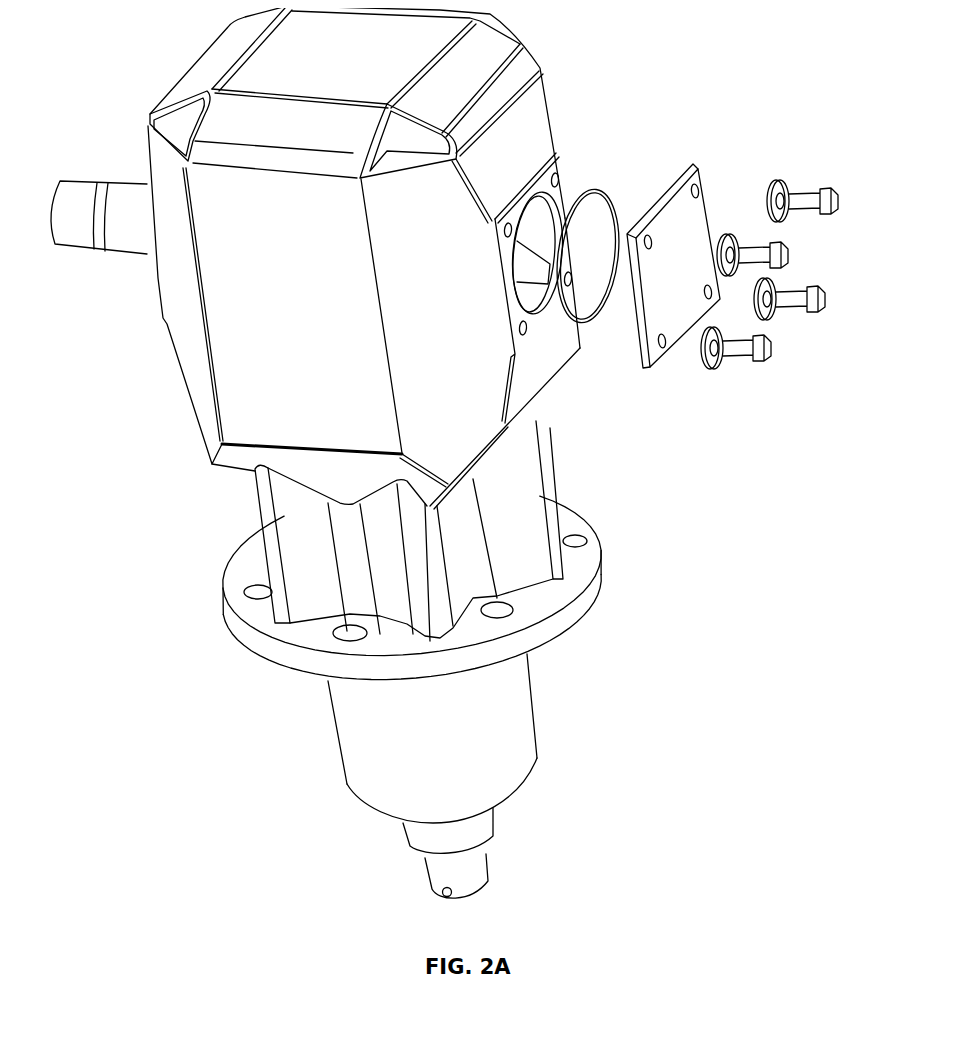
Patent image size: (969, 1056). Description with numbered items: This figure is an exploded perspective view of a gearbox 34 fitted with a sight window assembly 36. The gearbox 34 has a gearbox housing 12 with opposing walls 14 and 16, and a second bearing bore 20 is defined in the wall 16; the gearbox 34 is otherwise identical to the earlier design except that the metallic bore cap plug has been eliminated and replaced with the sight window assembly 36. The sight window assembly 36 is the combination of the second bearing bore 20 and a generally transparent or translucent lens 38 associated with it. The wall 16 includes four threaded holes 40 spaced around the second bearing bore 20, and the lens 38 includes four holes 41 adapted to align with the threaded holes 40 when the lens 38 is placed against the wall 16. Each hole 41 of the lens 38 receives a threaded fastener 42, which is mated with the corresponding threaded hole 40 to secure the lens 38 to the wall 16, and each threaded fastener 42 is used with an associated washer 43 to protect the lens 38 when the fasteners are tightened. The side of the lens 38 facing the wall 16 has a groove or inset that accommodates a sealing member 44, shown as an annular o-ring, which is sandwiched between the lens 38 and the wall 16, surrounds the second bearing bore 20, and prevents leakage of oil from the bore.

The gearbox housing 12 is at (225, 478).
The wall 14 is at (167, 322).
The wall 16 is at (547, 362).
The second bearing bore 20 is at (568, 237).
The gearbox 34 is at (122, 90).
The sight window assembly 36 is at (792, 273).
The lens 38 is at (700, 272).
The threaded holes 40 is at (563, 175).
The holes 41 is at (649, 233).
The threaded fastener 42 is at (807, 285).
The washer 43 is at (772, 180).
The sealing member 44 is at (594, 189).